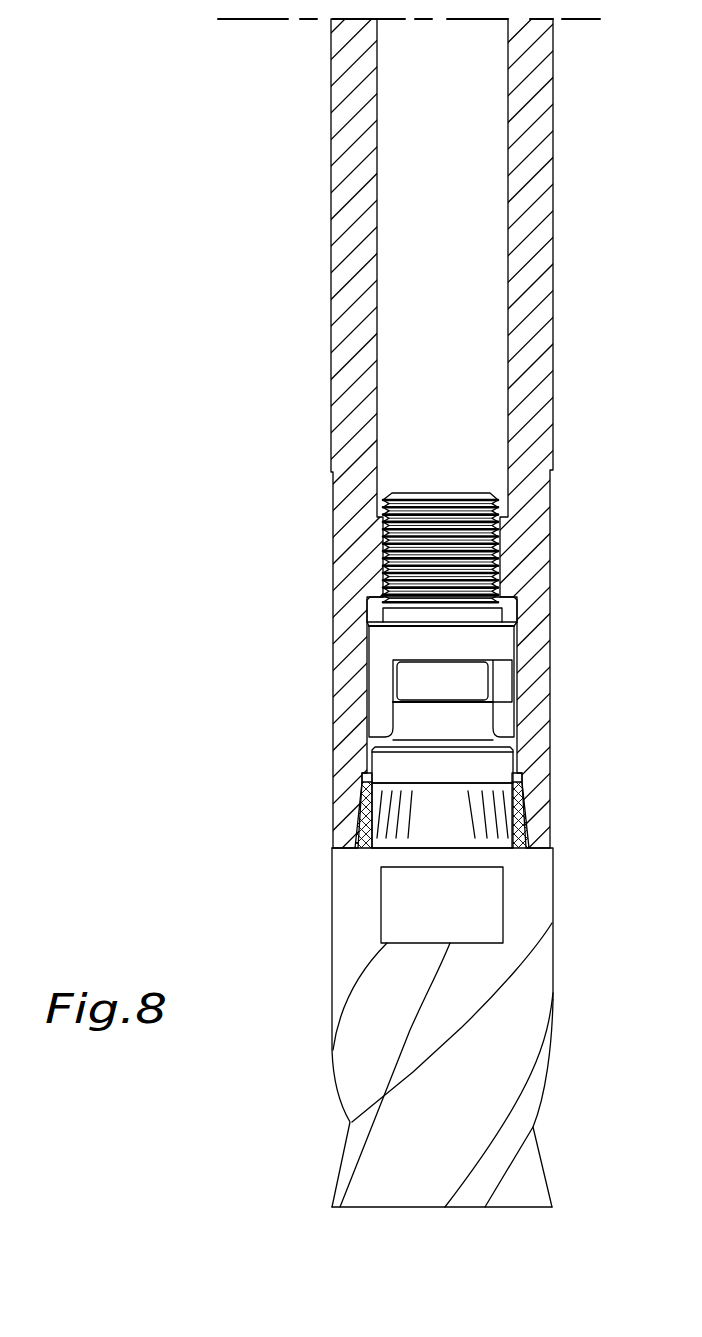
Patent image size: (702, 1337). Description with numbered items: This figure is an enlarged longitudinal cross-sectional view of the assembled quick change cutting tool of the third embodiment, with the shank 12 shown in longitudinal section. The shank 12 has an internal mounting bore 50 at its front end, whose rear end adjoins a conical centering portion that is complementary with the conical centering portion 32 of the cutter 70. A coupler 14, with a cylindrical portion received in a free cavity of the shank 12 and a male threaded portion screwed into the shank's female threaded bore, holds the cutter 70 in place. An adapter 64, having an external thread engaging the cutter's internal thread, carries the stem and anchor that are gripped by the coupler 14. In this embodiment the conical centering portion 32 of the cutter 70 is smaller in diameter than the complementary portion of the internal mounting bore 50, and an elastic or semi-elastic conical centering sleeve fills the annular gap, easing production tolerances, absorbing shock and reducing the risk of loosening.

The shank 12 is at (335, 421).
The coupler 14 is at (373, 658).
The adapter 64 is at (377, 762).
The internal mounting bore 50 is at (360, 826).
The conical centering portion 32 is at (503, 809).
The cutter 70 is at (332, 1065).